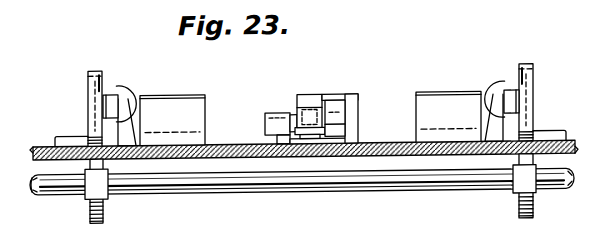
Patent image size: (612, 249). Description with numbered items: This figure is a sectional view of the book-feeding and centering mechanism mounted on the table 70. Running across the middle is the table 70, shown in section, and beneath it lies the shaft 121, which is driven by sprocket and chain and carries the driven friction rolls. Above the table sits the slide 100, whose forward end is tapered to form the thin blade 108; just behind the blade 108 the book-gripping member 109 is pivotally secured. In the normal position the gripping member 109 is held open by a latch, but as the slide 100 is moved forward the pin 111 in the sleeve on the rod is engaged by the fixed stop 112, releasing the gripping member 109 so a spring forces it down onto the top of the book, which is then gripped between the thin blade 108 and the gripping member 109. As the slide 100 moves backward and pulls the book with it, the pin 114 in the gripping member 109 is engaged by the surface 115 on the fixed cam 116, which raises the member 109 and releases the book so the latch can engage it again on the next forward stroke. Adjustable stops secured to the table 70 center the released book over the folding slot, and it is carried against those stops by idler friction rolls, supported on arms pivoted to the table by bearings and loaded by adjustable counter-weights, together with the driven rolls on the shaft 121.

The table 70 is at (232, 156).
The slide 100 is at (310, 140).
The thin blade 108 is at (298, 150).
The book-gripping member 109 is at (311, 115).
The pin 111 is at (266, 125).
The fixed stop 112 is at (291, 118).
The pin 114 is at (343, 124).
The surface 115 is at (348, 110).
The fixed cam 116 is at (344, 102).
The shaft 121 is at (388, 195).